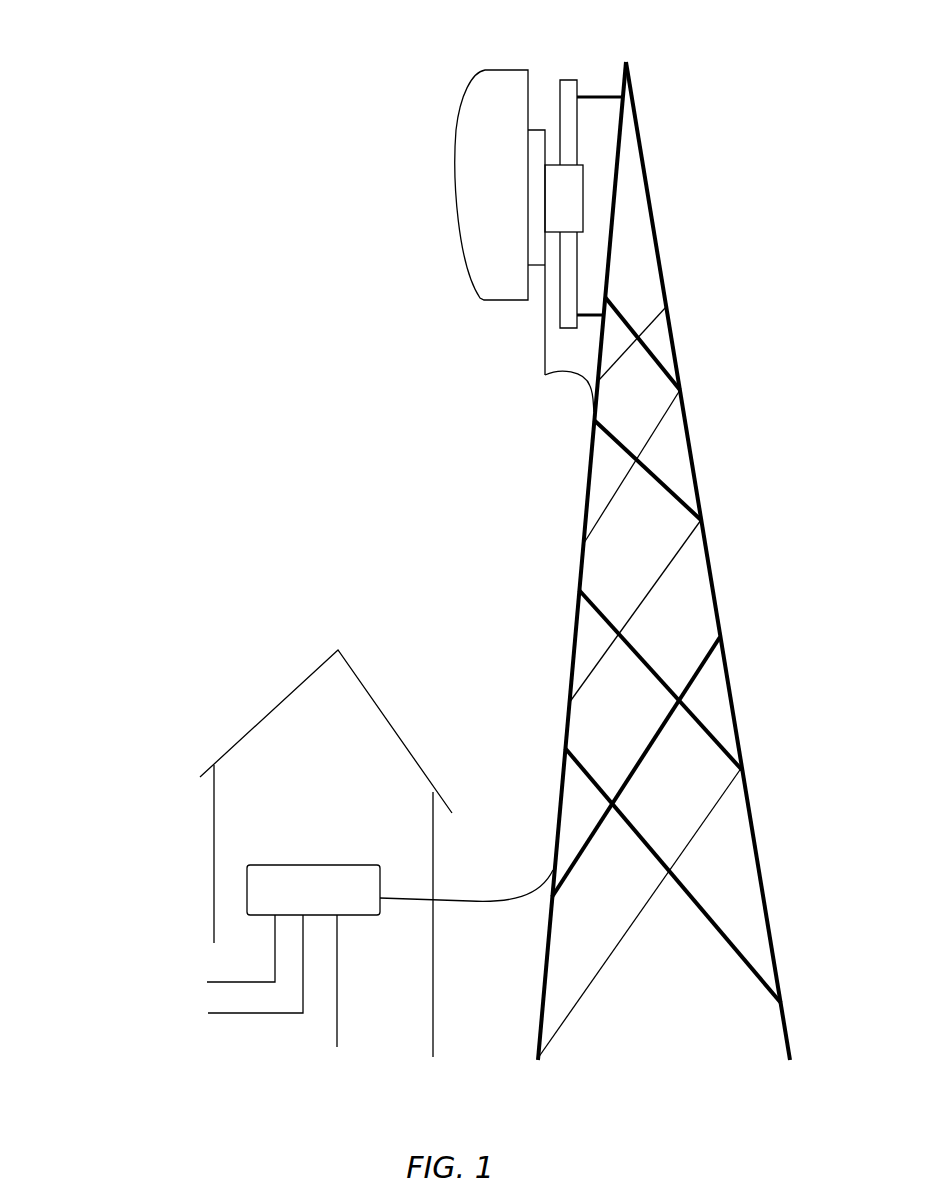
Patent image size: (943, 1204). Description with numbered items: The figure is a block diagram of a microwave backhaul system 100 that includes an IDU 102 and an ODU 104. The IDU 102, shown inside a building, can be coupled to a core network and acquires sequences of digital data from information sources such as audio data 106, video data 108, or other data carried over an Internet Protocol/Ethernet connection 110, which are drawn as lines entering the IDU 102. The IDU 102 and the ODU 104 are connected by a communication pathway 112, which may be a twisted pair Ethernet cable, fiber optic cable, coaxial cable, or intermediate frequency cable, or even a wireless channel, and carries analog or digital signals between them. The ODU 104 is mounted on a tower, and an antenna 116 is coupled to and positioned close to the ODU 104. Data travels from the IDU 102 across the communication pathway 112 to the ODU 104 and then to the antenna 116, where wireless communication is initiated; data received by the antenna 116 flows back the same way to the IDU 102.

The microwave backhaul system 100 is at (188, 161).
The IDU 102 is at (277, 865).
The ODU 104 is at (539, 90).
The audio data 106 is at (241, 948).
The video data 108 is at (255, 964).
The Internet Protocol (IP)/Ethernet connection 110 is at (338, 1018).
The communication pathway 112 is at (493, 905).
The antenna 116 is at (453, 114).